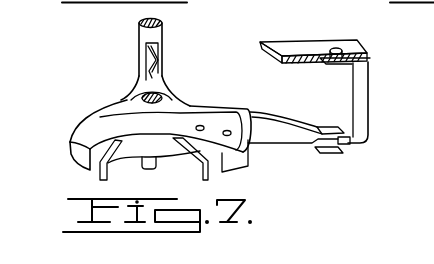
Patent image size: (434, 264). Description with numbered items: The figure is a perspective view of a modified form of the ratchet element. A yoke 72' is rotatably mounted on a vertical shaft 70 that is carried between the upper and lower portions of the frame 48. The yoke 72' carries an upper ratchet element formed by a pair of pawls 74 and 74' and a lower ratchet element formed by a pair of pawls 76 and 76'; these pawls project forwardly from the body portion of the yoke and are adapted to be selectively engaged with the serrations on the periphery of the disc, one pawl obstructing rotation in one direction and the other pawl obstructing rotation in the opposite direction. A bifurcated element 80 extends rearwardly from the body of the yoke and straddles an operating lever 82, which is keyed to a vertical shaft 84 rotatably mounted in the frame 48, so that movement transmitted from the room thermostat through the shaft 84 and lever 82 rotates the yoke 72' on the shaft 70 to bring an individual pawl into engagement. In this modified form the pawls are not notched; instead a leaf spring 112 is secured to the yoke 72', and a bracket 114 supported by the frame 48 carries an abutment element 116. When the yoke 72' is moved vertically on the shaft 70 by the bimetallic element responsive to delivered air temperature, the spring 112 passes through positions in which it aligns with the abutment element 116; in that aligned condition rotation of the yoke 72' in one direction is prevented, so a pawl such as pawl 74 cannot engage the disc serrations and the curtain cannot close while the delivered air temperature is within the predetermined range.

The frame 48 is at (298, 61).
The shaft 70 is at (146, 97).
The yoke 72' is at (218, 97).
The pawl 74 is at (139, 135).
The pawl 74' is at (251, 160).
The pawl 76 is at (117, 168).
The pawl 76' is at (183, 167).
The bifurcated element 80 is at (160, 80).
The operating lever 82 is at (168, 61).
The vertical shaft 84 is at (163, 27).
The leaf spring 112 is at (296, 119).
The bracket 114 is at (353, 87).
The abutment element 116 is at (347, 145).